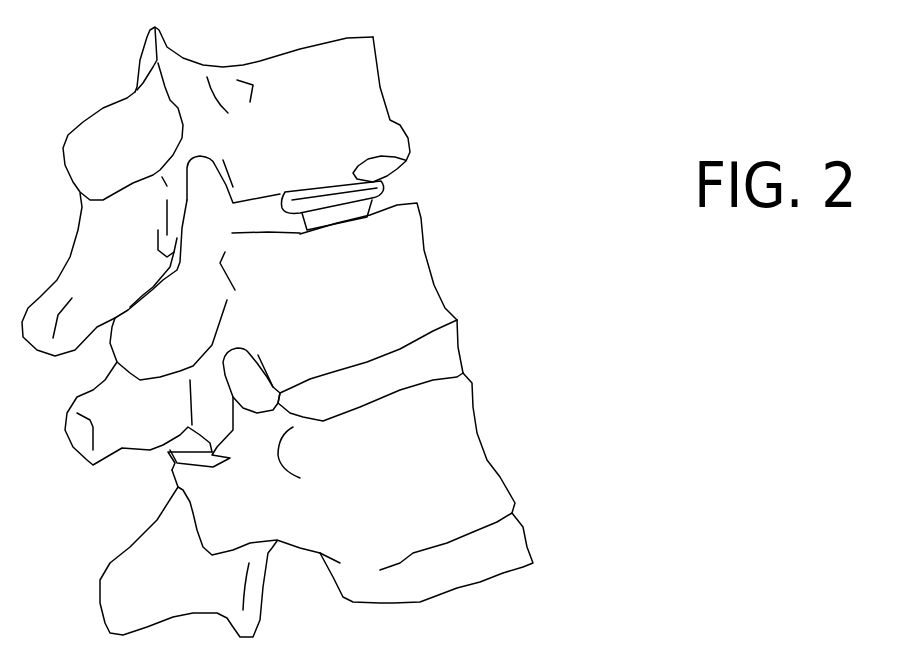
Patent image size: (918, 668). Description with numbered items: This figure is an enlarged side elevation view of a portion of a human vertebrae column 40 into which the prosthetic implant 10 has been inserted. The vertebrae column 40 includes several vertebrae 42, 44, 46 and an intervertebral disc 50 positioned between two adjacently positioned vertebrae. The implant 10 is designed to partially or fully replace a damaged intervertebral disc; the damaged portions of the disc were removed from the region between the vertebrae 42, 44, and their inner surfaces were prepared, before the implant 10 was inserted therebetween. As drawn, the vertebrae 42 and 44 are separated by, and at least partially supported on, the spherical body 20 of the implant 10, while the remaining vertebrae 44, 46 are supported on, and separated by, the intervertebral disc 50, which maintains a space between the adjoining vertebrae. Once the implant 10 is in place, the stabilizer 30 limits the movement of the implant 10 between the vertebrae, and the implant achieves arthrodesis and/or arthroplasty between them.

The implant 10 is at (333, 166).
The spherical body 20 is at (404, 158).
The stabilizer 30 is at (356, 182).
The human vertebrae column 40 is at (522, 194).
The vertebra 42 is at (353, 95).
The vertebra 44 is at (407, 270).
The vertebra 46 is at (453, 442).
The intervertebral disc 50 is at (507, 550).